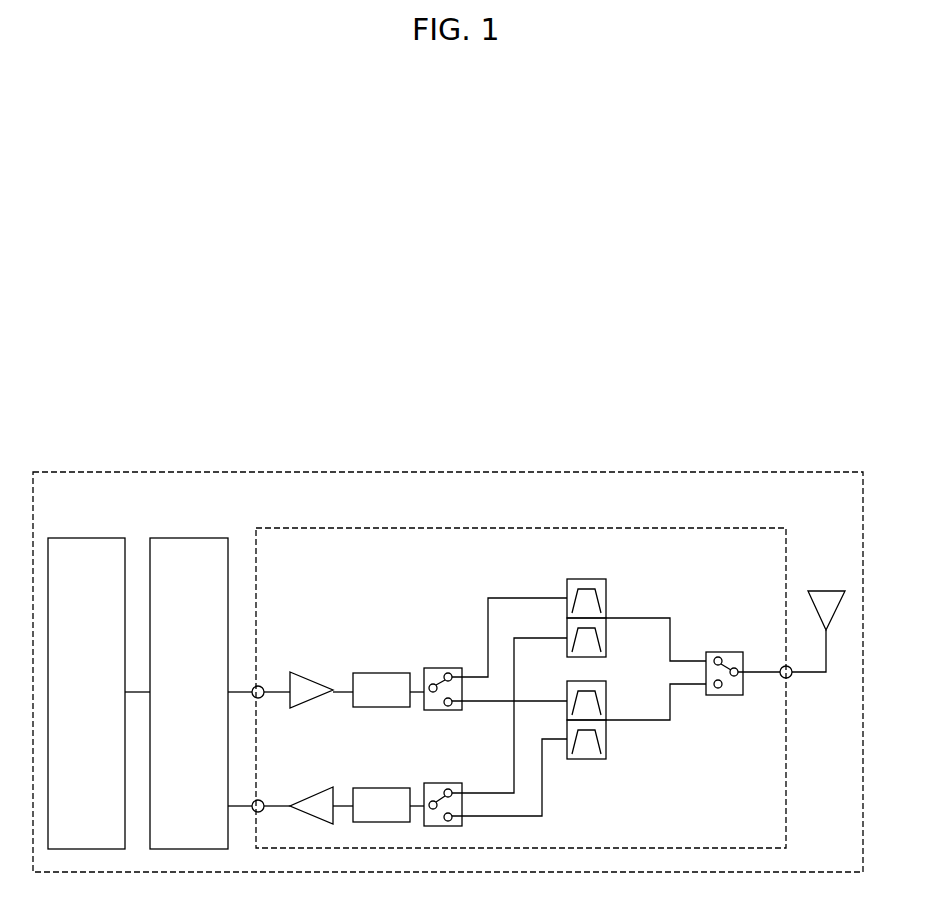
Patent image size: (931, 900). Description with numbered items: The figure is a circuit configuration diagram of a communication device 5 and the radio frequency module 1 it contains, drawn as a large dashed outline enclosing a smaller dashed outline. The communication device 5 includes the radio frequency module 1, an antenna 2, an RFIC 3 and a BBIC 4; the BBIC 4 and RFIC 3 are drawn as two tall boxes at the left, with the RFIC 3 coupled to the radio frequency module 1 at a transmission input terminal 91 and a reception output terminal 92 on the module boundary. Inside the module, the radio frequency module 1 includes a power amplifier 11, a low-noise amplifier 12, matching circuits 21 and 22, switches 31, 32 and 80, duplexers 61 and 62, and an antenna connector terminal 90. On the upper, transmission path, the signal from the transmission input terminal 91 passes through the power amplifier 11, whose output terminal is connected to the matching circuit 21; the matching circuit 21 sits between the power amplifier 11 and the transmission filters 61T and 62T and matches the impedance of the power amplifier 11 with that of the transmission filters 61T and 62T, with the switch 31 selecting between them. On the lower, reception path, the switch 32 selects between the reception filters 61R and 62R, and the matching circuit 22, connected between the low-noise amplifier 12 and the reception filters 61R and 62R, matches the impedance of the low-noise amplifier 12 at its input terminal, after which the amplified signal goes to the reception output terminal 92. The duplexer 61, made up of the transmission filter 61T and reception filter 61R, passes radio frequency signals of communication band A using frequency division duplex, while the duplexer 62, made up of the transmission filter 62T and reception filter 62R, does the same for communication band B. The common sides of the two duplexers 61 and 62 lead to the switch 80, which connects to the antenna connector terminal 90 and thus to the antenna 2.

The radio frequency module 1 is at (770, 528).
The antenna 2 is at (829, 590).
The RFIC 3 is at (203, 538).
The BBIC 4 is at (100, 538).
The communication device 5 is at (836, 472).
The power amplifier 11 is at (312, 672).
The low-noise amplifier 12 is at (313, 790).
The matching circuit 21 is at (383, 673).
The matching circuit 22 is at (383, 788).
The switch 31 is at (443, 668).
The switch 32 is at (443, 783).
The duplexer 61 is at (615, 605).
The transmission filter 61T is at (607, 588).
The reception filter 61R is at (607, 650).
The duplexer 62 is at (615, 734).
The transmission filter 62T is at (607, 687).
The reception filter 62R is at (607, 753).
The switch 80 is at (725, 652).
The antenna connector terminal 90 is at (792, 666).
The transmission input terminal 91 is at (261, 686).
The reception output terminal 92 is at (261, 800).